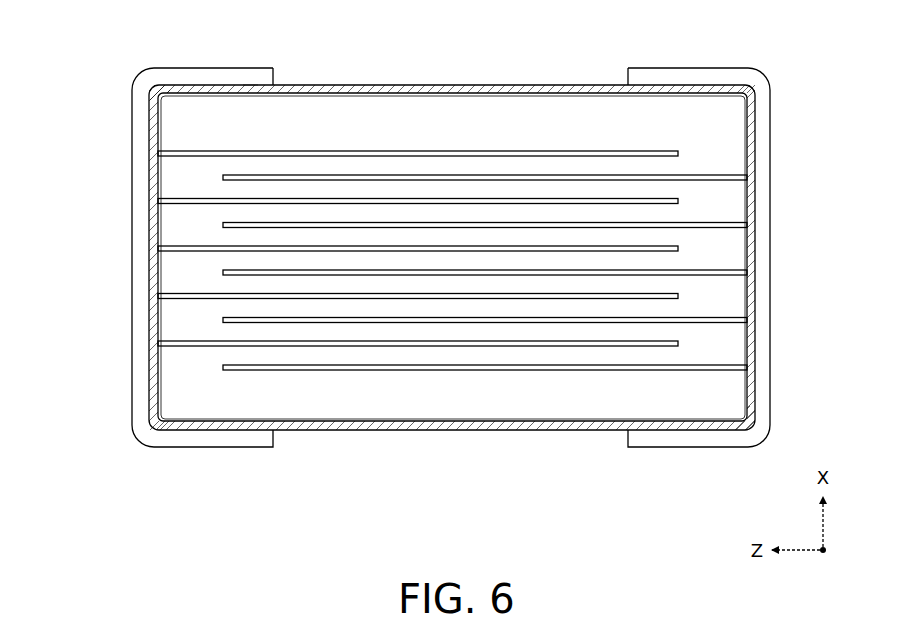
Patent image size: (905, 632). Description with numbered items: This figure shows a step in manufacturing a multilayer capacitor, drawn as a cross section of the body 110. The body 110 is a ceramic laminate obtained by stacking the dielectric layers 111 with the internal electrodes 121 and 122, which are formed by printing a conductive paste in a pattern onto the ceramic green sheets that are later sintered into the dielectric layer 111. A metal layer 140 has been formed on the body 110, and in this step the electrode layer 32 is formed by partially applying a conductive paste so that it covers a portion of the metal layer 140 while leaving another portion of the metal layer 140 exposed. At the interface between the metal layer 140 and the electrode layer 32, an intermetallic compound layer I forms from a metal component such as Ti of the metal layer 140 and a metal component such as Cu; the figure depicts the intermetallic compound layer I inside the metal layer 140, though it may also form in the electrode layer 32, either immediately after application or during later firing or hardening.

The electrode layer 32 is at (138, 328).
The metal layer 140 is at (318, 85).
The body 110 is at (383, 87).
The dielectric layer 111 is at (497, 165).
The internal electrode 121 is at (541, 152).
The internal electrode 122 is at (608, 175).
The intermetallic compound layer I is at (243, 85).